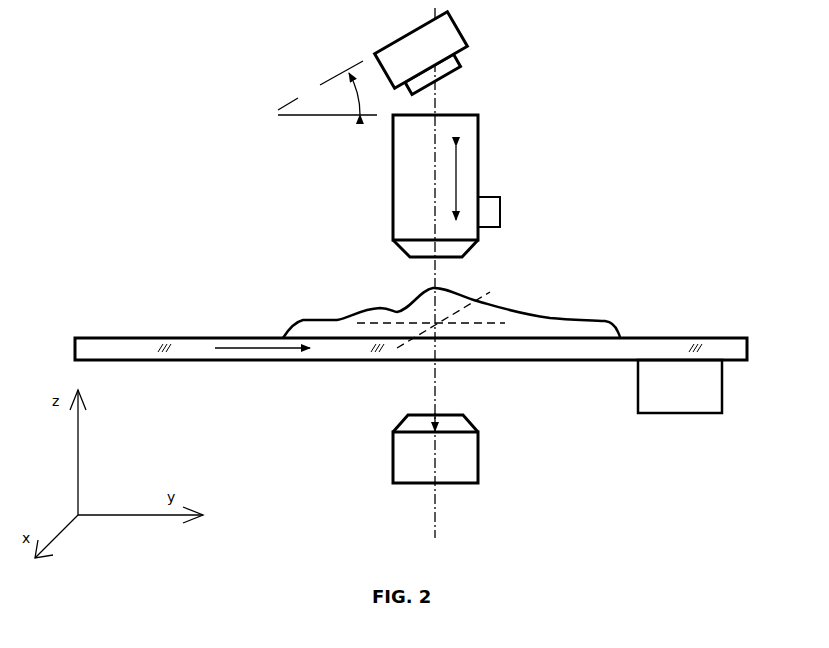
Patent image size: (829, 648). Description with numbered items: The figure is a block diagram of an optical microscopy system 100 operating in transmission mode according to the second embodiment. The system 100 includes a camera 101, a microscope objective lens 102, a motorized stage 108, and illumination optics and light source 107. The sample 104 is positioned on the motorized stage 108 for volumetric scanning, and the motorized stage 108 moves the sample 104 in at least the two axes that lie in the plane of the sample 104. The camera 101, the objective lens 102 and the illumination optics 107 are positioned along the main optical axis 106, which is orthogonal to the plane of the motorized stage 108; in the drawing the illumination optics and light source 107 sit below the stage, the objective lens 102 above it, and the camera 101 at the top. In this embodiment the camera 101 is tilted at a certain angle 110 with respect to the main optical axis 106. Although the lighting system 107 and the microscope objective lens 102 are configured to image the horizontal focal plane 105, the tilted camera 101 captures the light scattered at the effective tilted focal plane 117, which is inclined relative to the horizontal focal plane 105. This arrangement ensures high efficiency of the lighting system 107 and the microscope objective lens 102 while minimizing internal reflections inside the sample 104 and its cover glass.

The optical microscopy system 100 is at (245, 167).
The camera 101 is at (466, 44).
The microscope objective lens 102 is at (480, 177).
The sample 104 is at (617, 322).
The horizontal focal plane 105 is at (398, 322).
The main optical axis 106 is at (435, 506).
The illumination optics and light source 107 is at (478, 458).
The motorized stage 108 is at (235, 338).
The camera tilt angle 110 is at (315, 76).
The effective tilted focal plane 117 is at (487, 297).